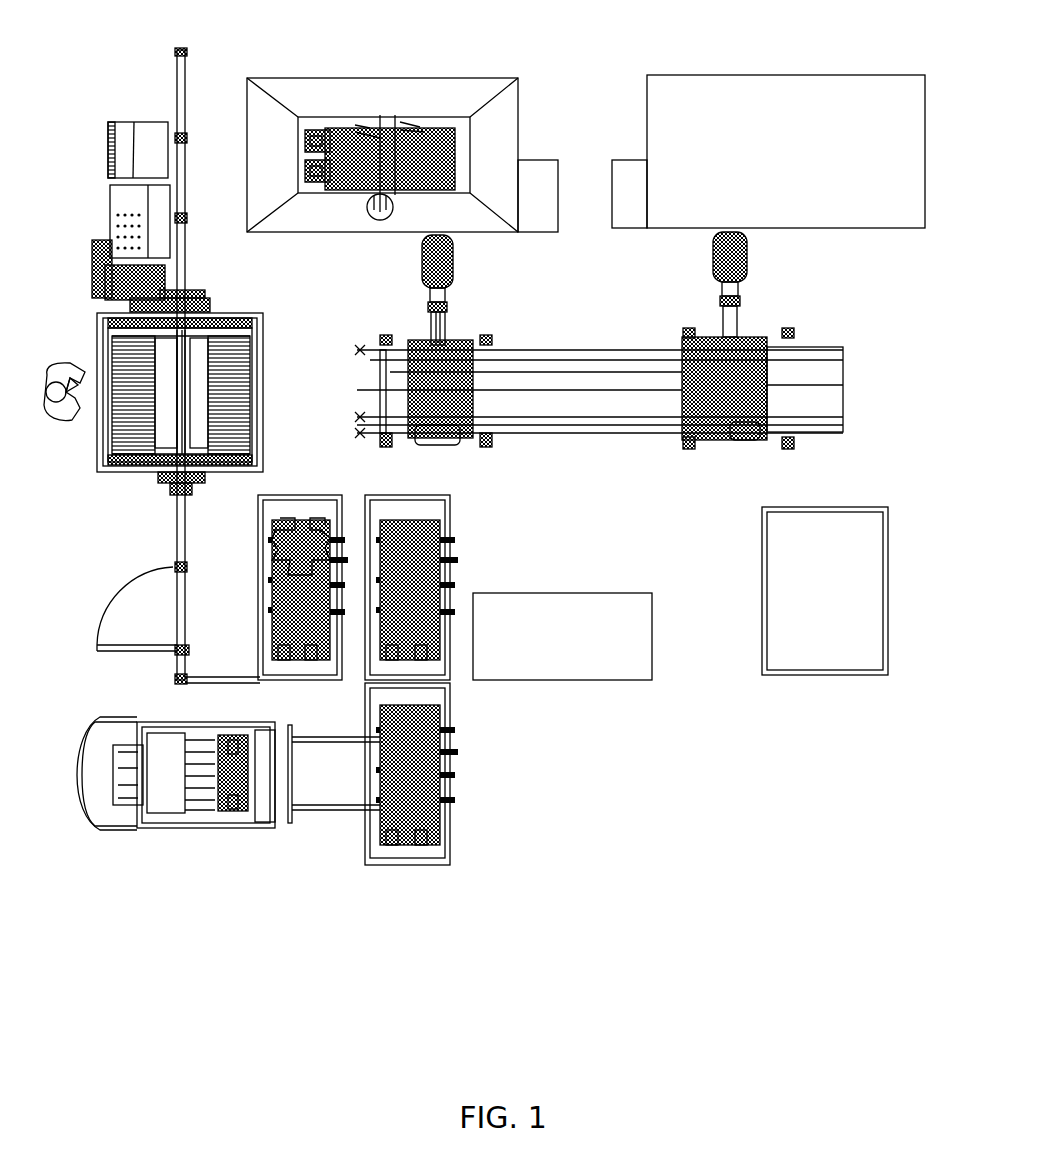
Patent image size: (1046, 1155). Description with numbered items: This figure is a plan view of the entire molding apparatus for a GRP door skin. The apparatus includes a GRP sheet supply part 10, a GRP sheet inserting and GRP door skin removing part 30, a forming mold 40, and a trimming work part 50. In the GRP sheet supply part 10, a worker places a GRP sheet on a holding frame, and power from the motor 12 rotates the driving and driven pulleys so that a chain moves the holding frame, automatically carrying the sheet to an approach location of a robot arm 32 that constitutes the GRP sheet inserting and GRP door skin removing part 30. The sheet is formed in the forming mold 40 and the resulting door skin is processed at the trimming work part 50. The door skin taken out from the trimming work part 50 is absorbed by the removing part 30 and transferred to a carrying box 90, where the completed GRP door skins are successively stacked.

The GRP sheet supply part 10 is at (82, 462).
The motor 12 is at (100, 258).
The GRP sheet inserting and GRP door skin removing part 30 is at (500, 315).
The robot arm 32 is at (425, 296).
The forming mold 40 is at (517, 48).
The trimming work part 50 is at (905, 572).
The carrying box 90 is at (468, 556).